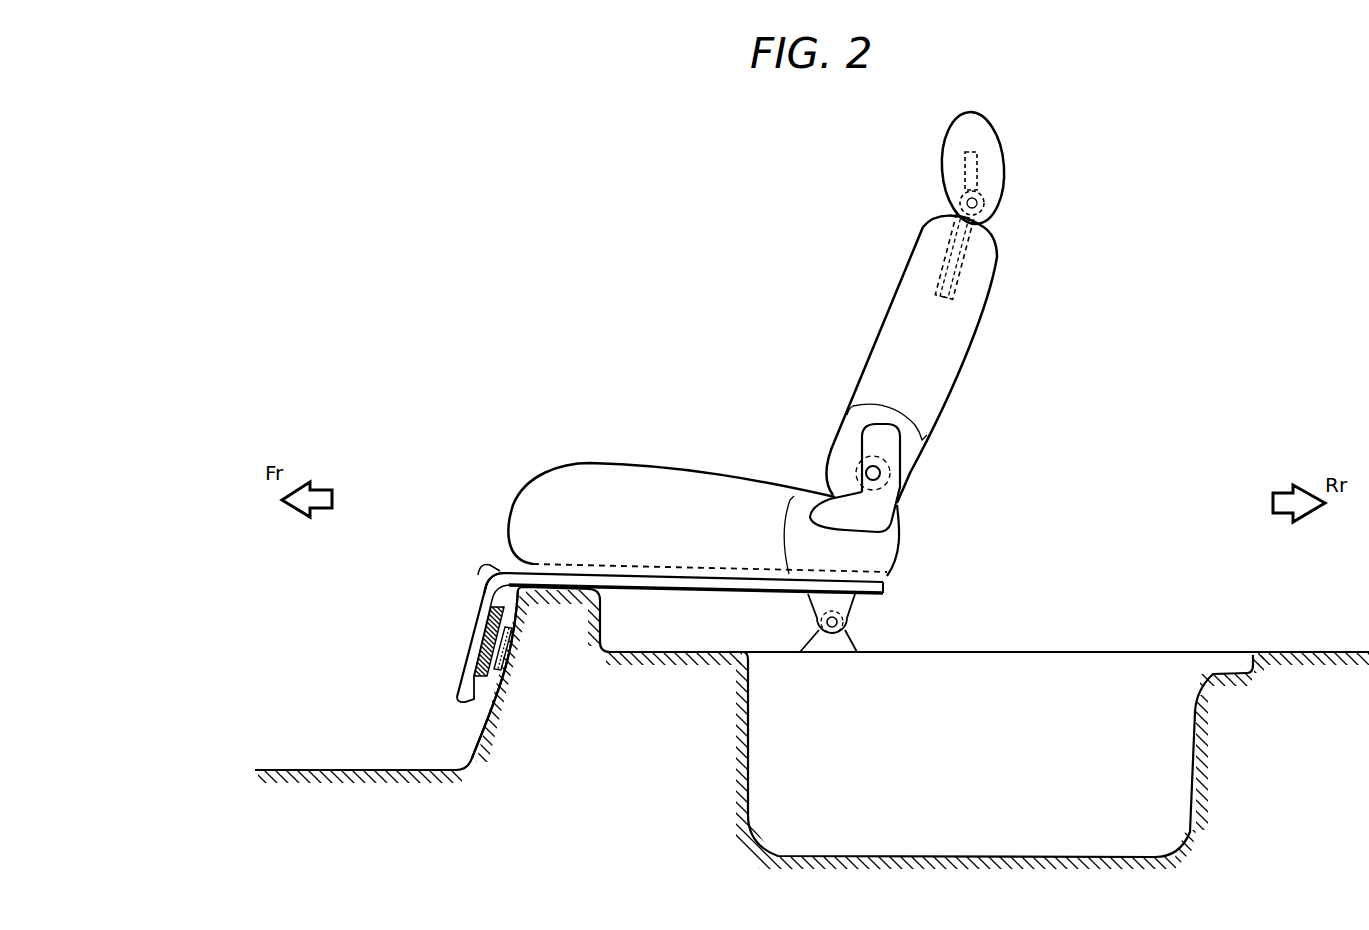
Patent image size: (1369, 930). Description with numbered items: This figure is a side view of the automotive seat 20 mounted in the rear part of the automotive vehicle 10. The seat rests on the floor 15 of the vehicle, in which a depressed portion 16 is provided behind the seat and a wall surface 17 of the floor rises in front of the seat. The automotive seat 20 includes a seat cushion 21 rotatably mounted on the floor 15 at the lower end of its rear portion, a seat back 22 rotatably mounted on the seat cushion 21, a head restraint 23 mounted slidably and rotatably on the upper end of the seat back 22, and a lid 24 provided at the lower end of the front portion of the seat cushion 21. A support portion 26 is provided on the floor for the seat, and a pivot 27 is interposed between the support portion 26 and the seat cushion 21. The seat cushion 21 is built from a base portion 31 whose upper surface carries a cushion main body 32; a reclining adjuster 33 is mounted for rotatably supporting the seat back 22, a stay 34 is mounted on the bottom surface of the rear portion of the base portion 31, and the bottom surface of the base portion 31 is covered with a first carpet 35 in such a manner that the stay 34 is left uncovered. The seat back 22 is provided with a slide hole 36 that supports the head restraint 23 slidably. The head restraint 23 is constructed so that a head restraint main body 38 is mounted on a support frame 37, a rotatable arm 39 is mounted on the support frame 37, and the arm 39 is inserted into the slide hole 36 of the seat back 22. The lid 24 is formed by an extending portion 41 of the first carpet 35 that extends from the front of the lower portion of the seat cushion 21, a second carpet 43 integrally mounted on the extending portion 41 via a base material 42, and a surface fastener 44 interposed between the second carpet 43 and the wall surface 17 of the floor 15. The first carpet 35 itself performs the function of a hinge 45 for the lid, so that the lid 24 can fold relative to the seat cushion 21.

The automotive vehicle 10 is at (415, 160).
The floor 15 is at (315, 767).
The depressed portion 16 is at (1010, 855).
The wall surface 17 is at (480, 735).
The automotive seat 20 is at (525, 285).
The seat cushion 21 is at (640, 445).
The seat back 22 is at (975, 360).
The head restraint 23 is at (1013, 168).
The lid 24 is at (464, 640).
The support portion 26 is at (850, 638).
The pivot 27 is at (840, 622).
The base portion 31 is at (657, 565).
The cushion main body 32 is at (615, 462).
The reclining adjuster 33 is at (870, 505).
The stay 34 is at (807, 603).
The first carpet 35 is at (565, 555).
The slide hole 36 is at (953, 273).
The support frame 37 is at (963, 170).
The head restraint main body 38 is at (1003, 148).
The arm 39 is at (967, 243).
The extending portion 41 is at (463, 670).
The base material 42 is at (487, 604).
The second carpet 43 is at (483, 697).
The surface fastener 44 is at (505, 650).
The hinge 45 is at (497, 571).